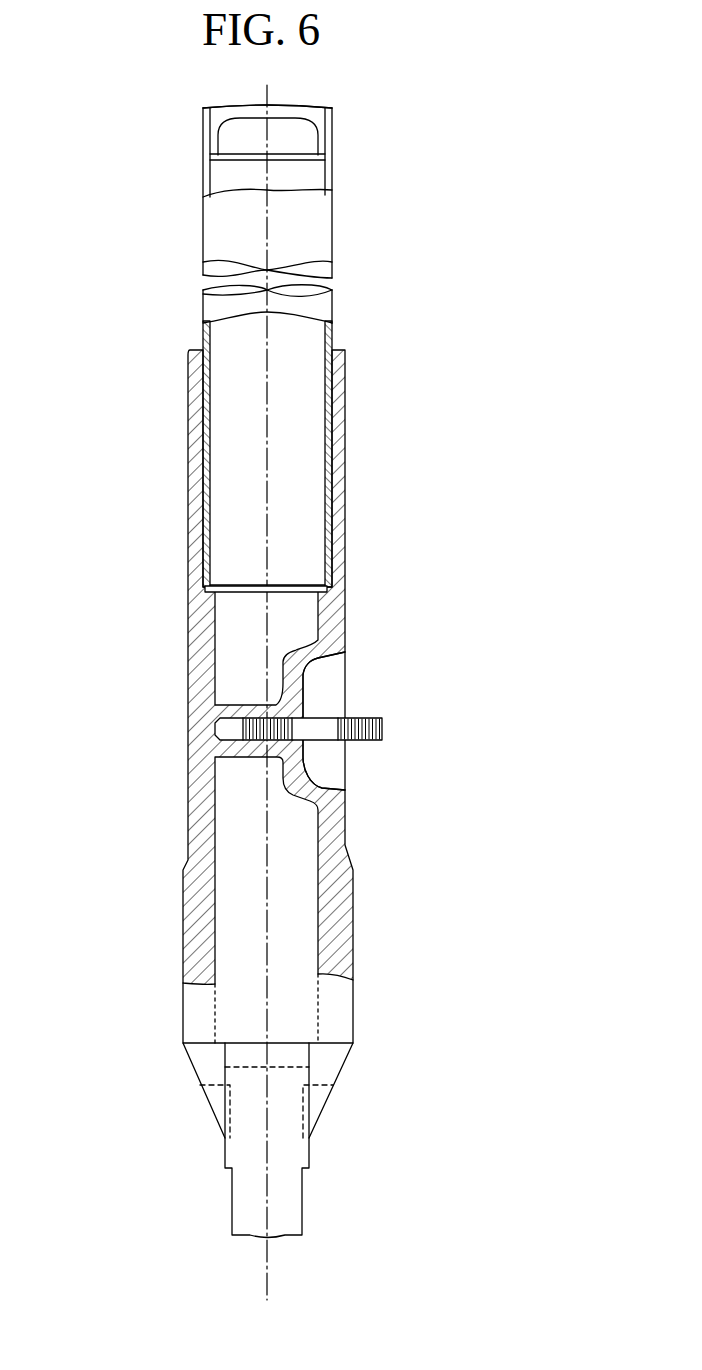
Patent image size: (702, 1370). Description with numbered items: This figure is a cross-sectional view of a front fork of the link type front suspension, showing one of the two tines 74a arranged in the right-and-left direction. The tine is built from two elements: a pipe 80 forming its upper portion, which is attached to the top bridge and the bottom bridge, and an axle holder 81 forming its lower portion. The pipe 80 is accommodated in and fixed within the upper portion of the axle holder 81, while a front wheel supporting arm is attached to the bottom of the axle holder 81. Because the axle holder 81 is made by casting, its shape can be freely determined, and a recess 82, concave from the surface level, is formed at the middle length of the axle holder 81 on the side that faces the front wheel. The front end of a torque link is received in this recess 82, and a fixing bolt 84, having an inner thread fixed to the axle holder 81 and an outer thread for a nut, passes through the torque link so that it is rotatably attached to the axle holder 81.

The tine 74a is at (351, 171).
The pipe 80 is at (213, 229).
The axle holder 81 is at (187, 501).
The recess 82 is at (325, 703).
The fixing bolt 84 is at (383, 731).